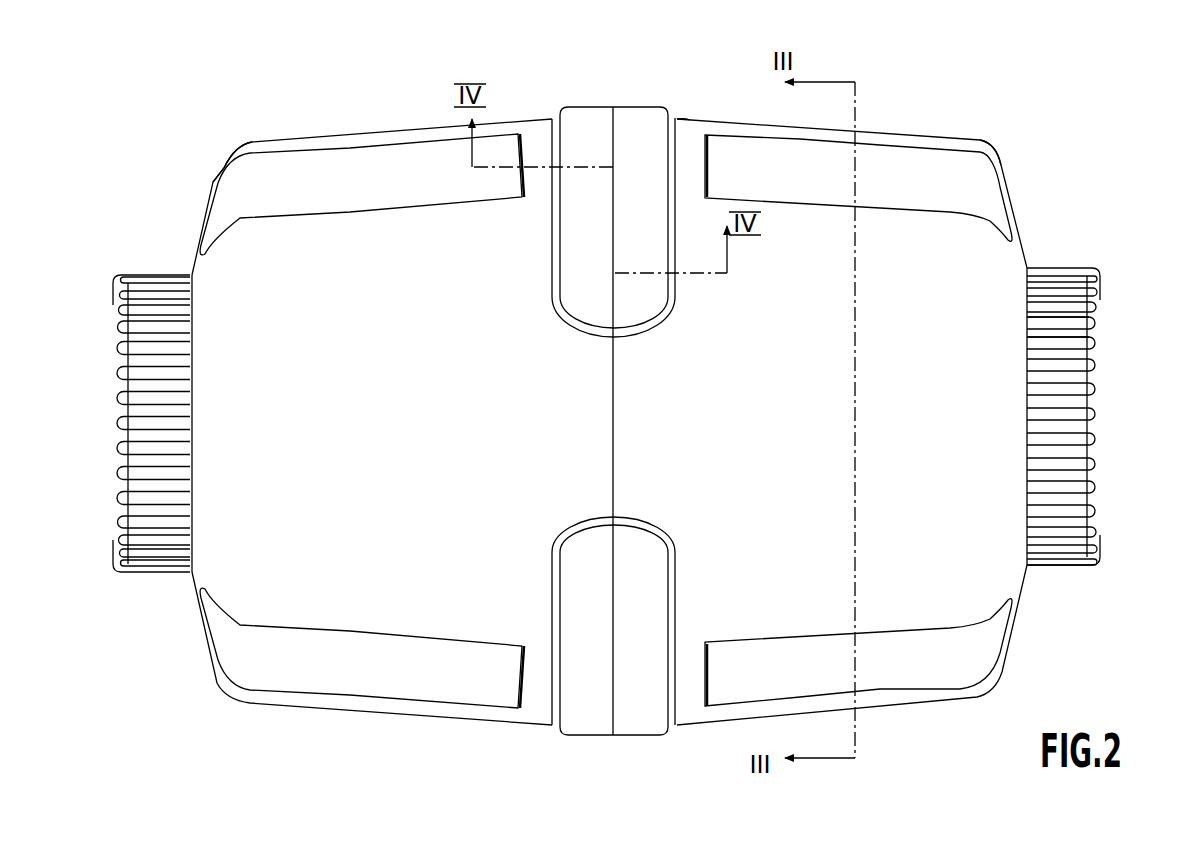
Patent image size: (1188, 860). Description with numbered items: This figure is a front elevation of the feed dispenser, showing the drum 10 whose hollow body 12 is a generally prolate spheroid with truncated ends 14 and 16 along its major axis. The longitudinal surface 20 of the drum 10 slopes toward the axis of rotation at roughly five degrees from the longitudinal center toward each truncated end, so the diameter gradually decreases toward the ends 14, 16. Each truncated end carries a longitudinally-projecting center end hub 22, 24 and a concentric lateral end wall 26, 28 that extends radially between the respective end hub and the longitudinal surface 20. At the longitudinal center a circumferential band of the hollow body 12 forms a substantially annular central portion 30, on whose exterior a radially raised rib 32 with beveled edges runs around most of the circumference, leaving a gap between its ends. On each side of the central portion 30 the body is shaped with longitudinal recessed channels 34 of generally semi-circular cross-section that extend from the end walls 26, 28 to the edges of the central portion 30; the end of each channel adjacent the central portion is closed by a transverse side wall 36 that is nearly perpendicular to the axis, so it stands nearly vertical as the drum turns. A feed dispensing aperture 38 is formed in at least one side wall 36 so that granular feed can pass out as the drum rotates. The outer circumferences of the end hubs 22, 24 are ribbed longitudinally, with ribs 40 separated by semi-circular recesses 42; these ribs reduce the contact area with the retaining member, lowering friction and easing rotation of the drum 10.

The drum 10 is at (343, 115).
The hollow body 12 is at (293, 150).
The truncated end 14 is at (1025, 255).
The truncated end 16 is at (197, 603).
The longitudinal surface 20 is at (293, 598).
The end hub 22 is at (1100, 327).
The end hub 24 is at (112, 322).
The lateral end wall 26 is at (1017, 235).
The lateral end wall 28 is at (200, 257).
The central portion 30 is at (688, 143).
The radially raised rib 32 is at (637, 130).
The recessed channel 34 is at (247, 192).
The side wall 36 is at (708, 153).
The feed dispensing aperture 38 is at (713, 660).
The rib 40 is at (1027, 310).
The recess 42 is at (1032, 325).